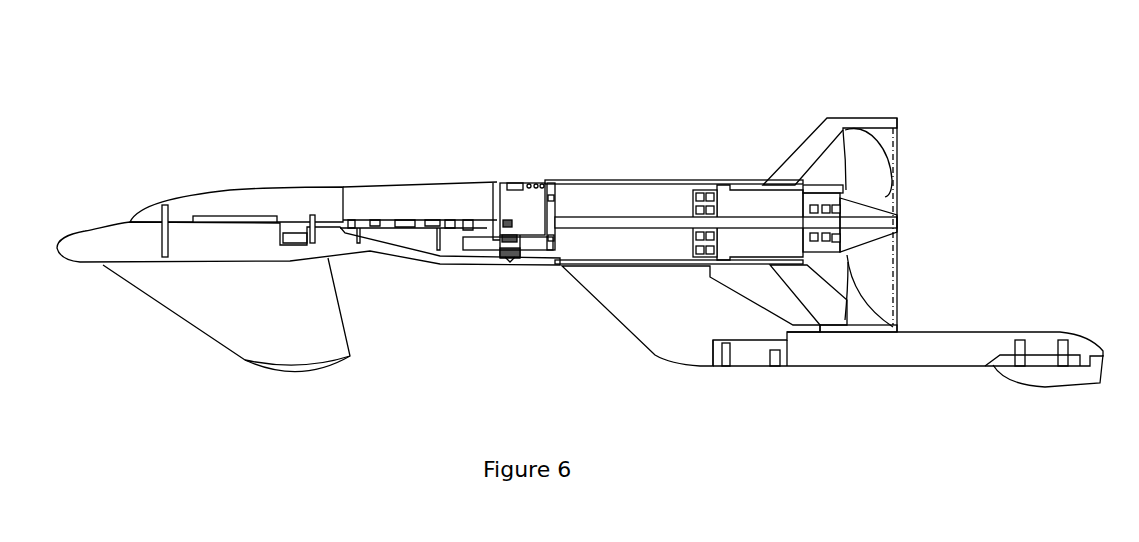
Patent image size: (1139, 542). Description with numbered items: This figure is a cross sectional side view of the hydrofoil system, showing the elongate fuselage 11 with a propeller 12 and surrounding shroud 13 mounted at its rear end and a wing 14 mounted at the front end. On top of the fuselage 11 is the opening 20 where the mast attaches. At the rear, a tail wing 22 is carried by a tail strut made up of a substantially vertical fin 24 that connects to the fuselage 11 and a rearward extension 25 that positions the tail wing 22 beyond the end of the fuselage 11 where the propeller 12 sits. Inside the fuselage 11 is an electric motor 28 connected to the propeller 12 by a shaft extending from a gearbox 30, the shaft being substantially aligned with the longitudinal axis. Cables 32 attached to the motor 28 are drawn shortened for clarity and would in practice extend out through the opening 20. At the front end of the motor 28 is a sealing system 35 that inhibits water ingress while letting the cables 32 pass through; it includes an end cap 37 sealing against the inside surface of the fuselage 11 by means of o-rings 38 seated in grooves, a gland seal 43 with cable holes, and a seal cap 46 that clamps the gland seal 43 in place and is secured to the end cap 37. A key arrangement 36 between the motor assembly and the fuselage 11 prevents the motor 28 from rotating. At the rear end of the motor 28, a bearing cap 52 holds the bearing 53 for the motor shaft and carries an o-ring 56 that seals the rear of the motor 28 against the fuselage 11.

The fuselage 11 is at (667, 180).
The propeller 12 is at (877, 172).
The shroud 13 is at (840, 120).
The wing 14 is at (213, 318).
The opening 20 is at (375, 192).
The tail wing 22 is at (1065, 378).
The fin 24 is at (643, 321).
The rearward extension 25 is at (900, 352).
The electric motor 28 is at (628, 197).
The gearbox 30 is at (775, 207).
The cables 32 is at (483, 253).
The sealing system 35 is at (533, 191).
The key arrangement 36 is at (507, 193).
The end cap 37 is at (530, 197).
The o-rings 38 is at (535, 183).
The gland seal 43 is at (515, 265).
The seal cap 46 is at (493, 197).
The bearing cap 52 is at (823, 247).
The bearing 53 is at (833, 237).
The o-ring 56 is at (757, 183).